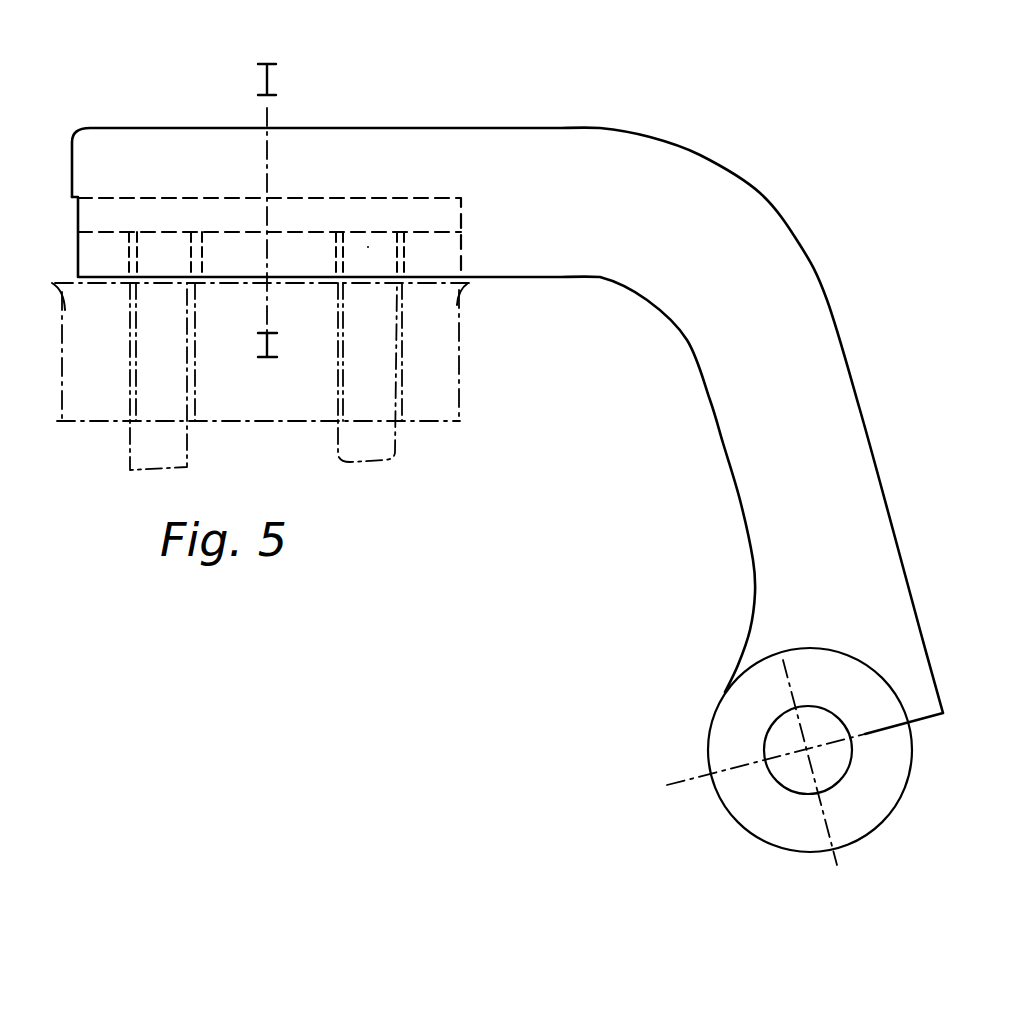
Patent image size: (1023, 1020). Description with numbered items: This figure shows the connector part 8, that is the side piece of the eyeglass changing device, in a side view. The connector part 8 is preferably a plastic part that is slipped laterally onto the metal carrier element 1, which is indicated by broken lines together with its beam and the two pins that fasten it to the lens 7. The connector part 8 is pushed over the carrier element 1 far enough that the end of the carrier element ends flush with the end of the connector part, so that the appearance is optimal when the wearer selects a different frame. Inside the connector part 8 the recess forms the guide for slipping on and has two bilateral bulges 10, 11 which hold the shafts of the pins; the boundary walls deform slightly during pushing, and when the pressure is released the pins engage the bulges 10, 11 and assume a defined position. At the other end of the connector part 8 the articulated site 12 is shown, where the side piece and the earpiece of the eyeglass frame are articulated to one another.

The carrier element 1 is at (342, 192).
The lens 7 is at (93, 402).
The connector part 8 is at (652, 137).
The bulge 10 is at (175, 243).
The bulge 11 is at (368, 247).
The articulated site 12 is at (913, 766).